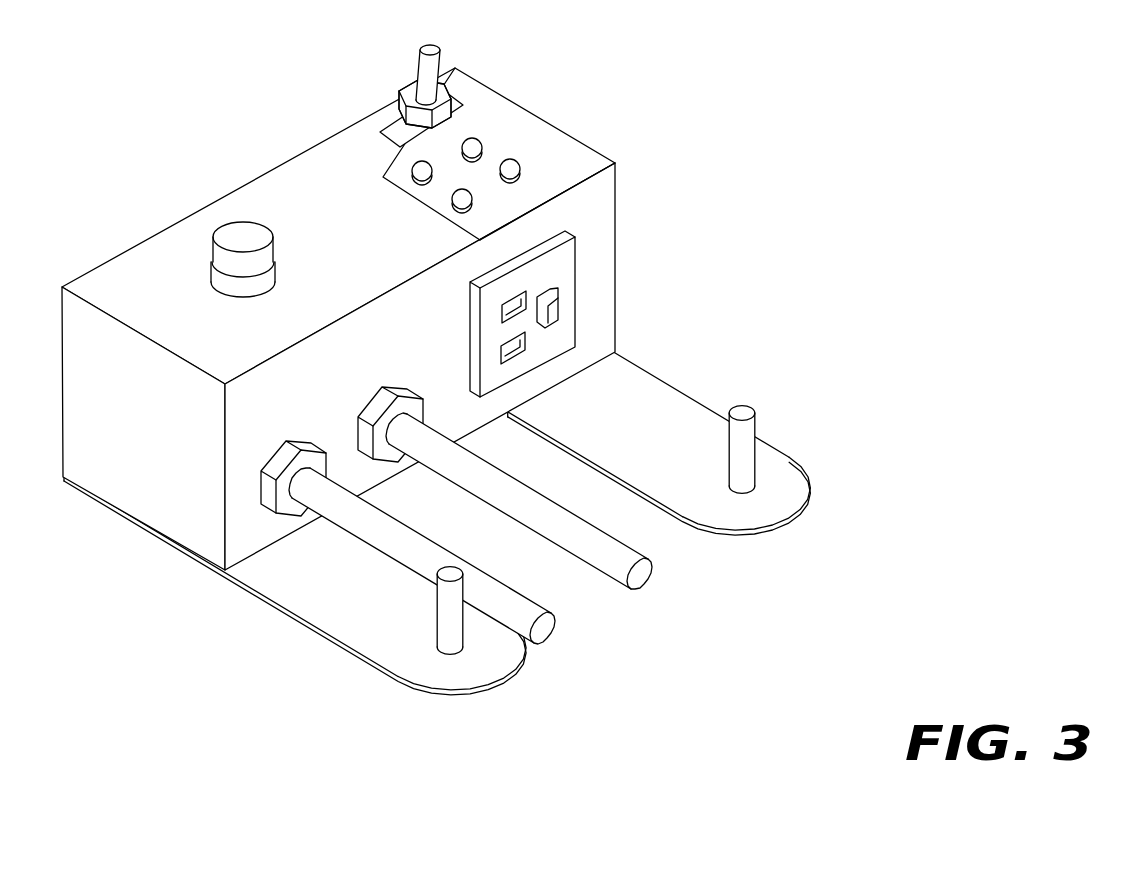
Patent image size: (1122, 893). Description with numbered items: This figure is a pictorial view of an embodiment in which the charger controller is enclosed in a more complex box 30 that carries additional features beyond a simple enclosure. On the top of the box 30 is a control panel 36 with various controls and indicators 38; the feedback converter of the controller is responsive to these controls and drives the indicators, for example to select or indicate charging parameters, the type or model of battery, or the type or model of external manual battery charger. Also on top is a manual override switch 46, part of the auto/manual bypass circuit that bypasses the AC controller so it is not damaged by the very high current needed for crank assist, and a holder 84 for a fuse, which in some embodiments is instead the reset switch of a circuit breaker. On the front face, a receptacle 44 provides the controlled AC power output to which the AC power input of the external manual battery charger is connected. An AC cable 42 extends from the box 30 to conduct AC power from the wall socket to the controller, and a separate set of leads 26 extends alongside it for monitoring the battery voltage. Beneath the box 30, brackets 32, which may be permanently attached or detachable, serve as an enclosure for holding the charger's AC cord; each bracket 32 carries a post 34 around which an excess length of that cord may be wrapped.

The leads 26 is at (595, 527).
The more complex box 30 is at (492, 84).
The bracket 32 is at (667, 381).
The post 34 is at (758, 416).
The control panel 36 is at (572, 160).
The controls and indicators 38 is at (479, 144).
The AC cable 42 is at (478, 573).
The receptacle 44 is at (576, 278).
The manual override switch 46 is at (418, 70).
The holder 84 is at (222, 223).